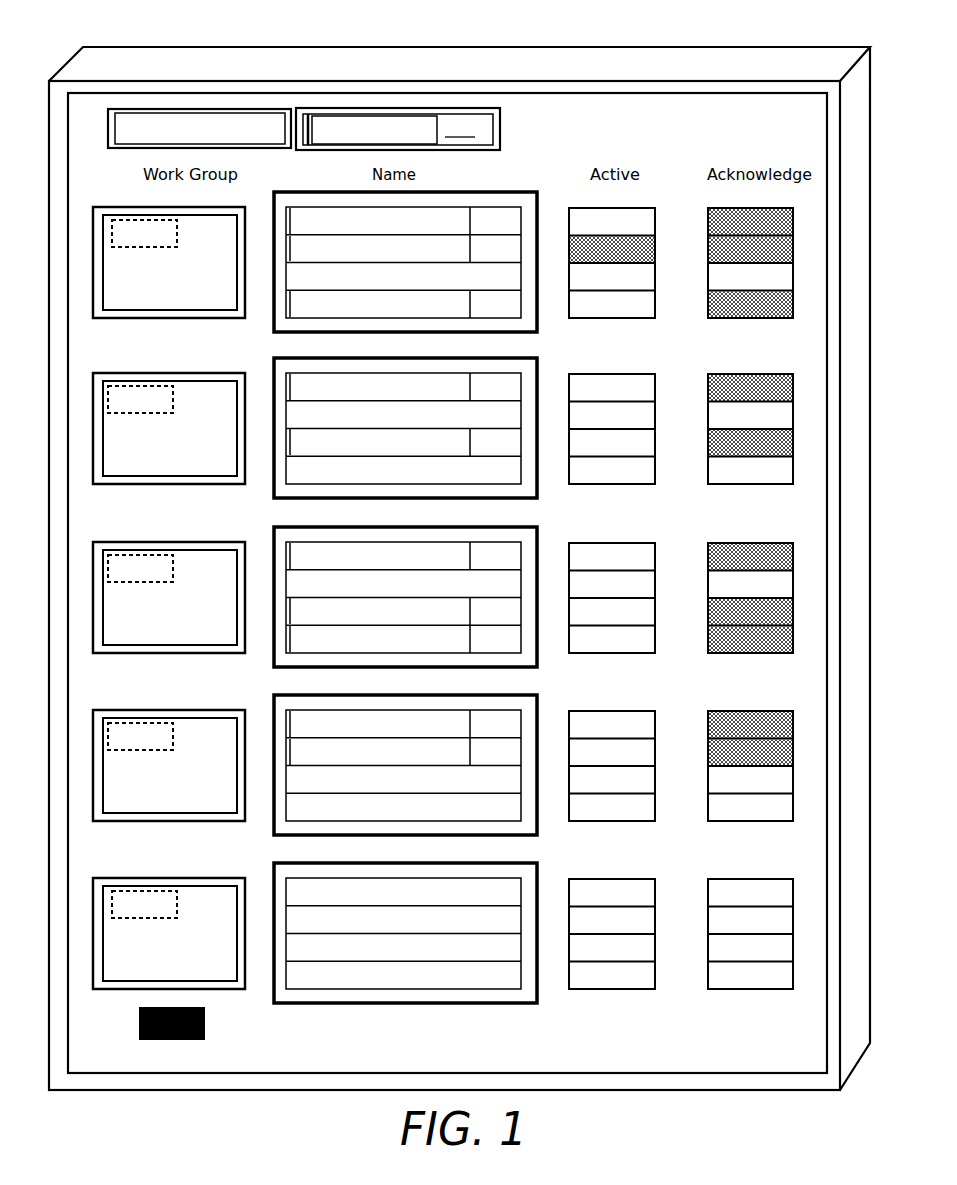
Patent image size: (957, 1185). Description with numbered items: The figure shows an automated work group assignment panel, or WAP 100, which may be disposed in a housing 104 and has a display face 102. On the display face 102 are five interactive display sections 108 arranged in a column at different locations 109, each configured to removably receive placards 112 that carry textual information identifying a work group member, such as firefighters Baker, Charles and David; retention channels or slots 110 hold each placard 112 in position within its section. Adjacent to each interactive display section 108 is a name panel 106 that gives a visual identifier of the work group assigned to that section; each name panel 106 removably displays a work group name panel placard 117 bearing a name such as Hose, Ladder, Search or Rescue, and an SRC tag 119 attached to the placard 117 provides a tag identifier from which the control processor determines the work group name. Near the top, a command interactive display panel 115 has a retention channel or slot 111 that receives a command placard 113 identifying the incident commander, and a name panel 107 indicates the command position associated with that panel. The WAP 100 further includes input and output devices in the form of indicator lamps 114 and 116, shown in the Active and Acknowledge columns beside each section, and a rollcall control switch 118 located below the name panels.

The work group assignment panel (WAP) 100 is at (647, 1035).
The display face 102 is at (684, 141).
The housing 104 is at (626, 57).
The name panel 106 is at (100, 1006).
The name panel 107 is at (125, 145).
The interactive display section 108 is at (530, 871).
The location 109 is at (418, 1022).
The retention channel or slot 110 is at (512, 229).
The retention channel or slot 111 is at (460, 129).
The placard 112 is at (466, 229).
The command placard 113 is at (340, 138).
The indicator lamp 114 is at (626, 231).
The command interactive display panel 115 is at (500, 130).
The indicator lamp 116 is at (764, 231).
The work group name panel placard 117 is at (170, 598).
The rollcall control switch 118 is at (205, 1025).
The SRC tag 119 is at (142, 569).